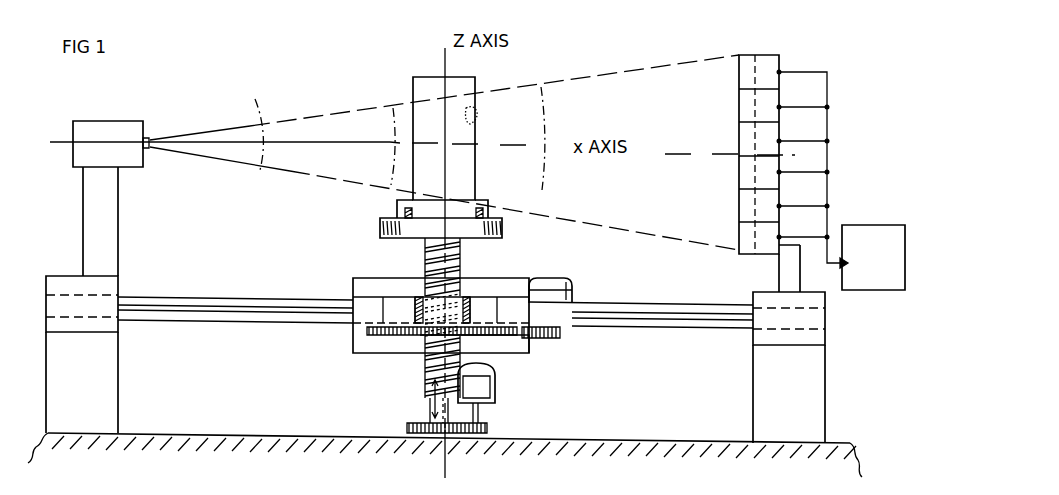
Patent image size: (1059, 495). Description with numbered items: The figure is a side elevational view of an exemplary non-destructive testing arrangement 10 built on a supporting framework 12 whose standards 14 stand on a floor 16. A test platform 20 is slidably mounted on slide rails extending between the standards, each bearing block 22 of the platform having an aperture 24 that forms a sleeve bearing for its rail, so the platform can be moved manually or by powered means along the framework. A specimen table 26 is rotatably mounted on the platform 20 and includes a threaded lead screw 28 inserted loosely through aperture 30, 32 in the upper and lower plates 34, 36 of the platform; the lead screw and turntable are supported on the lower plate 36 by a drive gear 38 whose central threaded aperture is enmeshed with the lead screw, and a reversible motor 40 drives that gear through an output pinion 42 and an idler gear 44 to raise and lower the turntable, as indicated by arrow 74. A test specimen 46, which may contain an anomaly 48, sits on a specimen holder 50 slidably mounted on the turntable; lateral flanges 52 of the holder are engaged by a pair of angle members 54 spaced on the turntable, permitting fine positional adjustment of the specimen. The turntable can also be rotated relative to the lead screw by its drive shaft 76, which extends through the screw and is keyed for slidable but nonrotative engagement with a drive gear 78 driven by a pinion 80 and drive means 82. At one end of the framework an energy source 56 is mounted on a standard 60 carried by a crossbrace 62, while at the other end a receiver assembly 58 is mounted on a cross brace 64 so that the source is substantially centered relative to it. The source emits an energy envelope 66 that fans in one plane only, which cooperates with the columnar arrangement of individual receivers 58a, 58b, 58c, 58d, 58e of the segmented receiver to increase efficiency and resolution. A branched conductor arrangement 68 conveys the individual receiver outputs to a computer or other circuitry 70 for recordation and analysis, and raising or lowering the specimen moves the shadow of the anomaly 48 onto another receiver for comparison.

The non-destructive testing arrangement 10 is at (525, 68).
The supporting framework 12 is at (135, 332).
The standards 14 is at (56, 360).
The floor 16 is at (203, 441).
The test platform 20 is at (355, 283).
The bearing block 22 is at (352, 333).
The aperture 24 is at (396, 300).
The specimen table 26 is at (502, 231).
The threaded lead screw 28 is at (462, 285).
The aperture 30 is at (487, 287).
The aperture 32 is at (467, 348).
The upper plate 34 is at (498, 288).
The lower plate 36 is at (352, 345).
The drive gear 38 is at (418, 330).
The reversible motor 40 is at (573, 290).
The output pinion 42 is at (560, 333).
The idler gear 44 is at (533, 338).
The test specimen 46 is at (425, 92).
The anomaly 48 is at (475, 117).
The specimen holder 50 is at (455, 210).
The lateral flanges 52 is at (478, 213).
The angle members 54 is at (396, 203).
The energy source 56 is at (73, 127).
The receiver assembly 58 is at (768, 45).
The individual receiver 58a is at (746, 107).
The individual receiver 58b is at (746, 140).
The individual receiver 58c is at (746, 172).
The individual receiver 58d is at (746, 205).
The individual receiver 58e is at (746, 238).
The standard 60 is at (92, 220).
The crossbrace 62 is at (66, 276).
The cross brace 64 is at (765, 292).
The energy envelope 66 is at (258, 108).
The branched conductor arrangement 68 is at (827, 128).
The computer or other circuitry 70 is at (852, 229).
The arrow 74 is at (432, 402).
The drive shaft 76 is at (457, 413).
The drive gear 78 is at (407, 429).
The pinion 80 is at (489, 428).
The drive means 82 is at (496, 386).